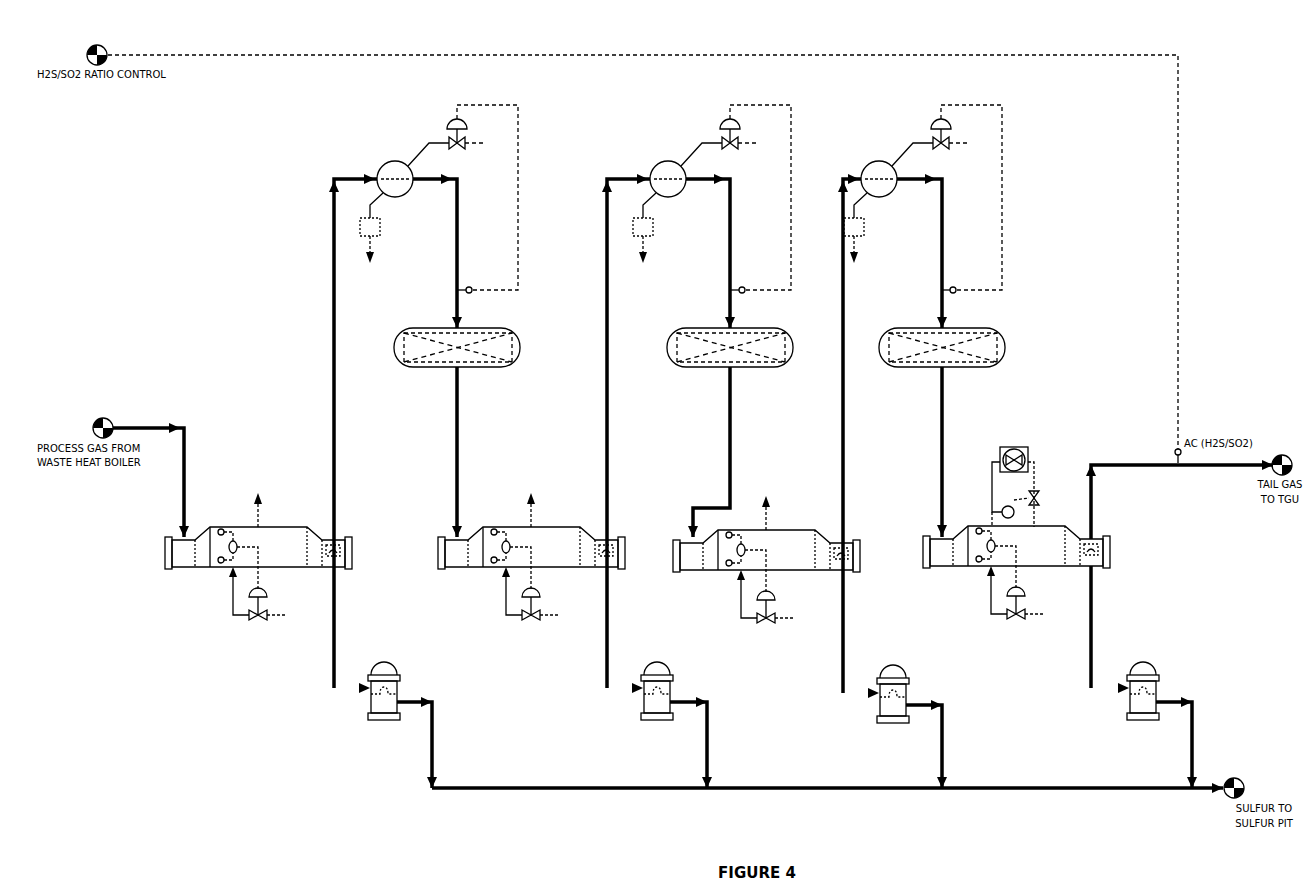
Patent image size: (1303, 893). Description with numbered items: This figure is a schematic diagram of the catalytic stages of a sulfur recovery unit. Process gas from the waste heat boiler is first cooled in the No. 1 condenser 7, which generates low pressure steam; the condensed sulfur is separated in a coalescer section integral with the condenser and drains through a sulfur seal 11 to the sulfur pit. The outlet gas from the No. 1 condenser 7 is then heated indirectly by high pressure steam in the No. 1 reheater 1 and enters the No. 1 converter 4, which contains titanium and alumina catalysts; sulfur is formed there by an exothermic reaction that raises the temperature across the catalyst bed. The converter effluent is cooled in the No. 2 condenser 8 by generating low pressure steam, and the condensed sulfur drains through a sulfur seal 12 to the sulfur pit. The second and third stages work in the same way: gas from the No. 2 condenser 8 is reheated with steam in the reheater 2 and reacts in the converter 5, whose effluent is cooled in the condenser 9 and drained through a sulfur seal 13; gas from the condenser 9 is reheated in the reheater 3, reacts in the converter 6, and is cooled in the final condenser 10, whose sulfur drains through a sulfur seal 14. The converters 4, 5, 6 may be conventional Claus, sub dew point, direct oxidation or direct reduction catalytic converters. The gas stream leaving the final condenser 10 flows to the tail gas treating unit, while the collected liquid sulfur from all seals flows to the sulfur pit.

The No. 1 reheater 1 is at (437, 199).
The reheater 2 is at (706, 199).
The reheater 3 is at (920, 199).
The No. 1 converter 4 is at (457, 332).
The converter 5 is at (730, 333).
The converter 6 is at (942, 333).
The No. 1 condenser 7 is at (258, 548).
The No. 2 condenser 8 is at (531, 548).
The condenser 9 is at (766, 551).
The condenser 10 is at (1016, 533).
The sulfur seal 11 is at (371, 681).
The sulfur seal 12 is at (645, 681).
The sulfur seal 13 is at (881, 682).
The sulfur seal 14 is at (1132, 681).